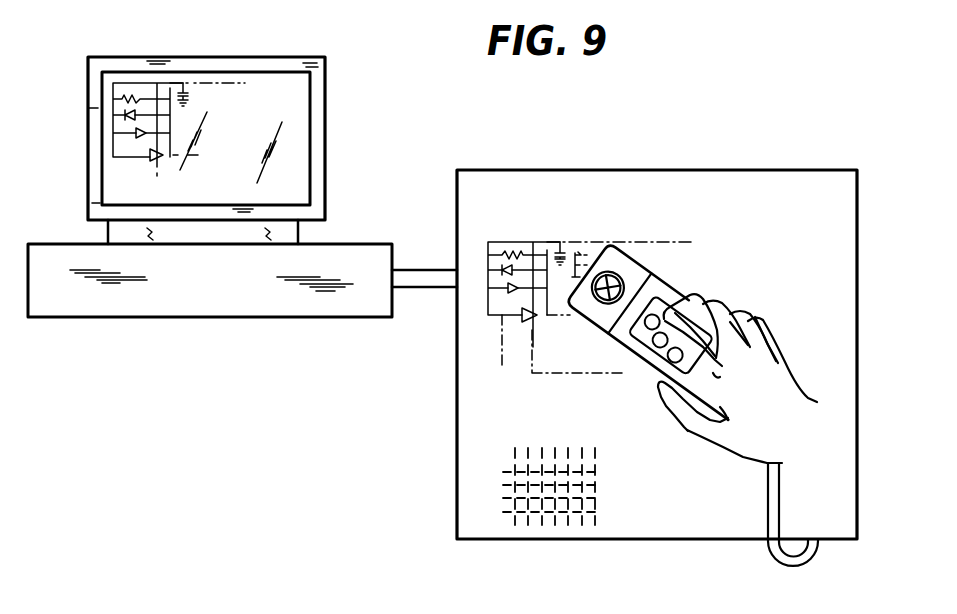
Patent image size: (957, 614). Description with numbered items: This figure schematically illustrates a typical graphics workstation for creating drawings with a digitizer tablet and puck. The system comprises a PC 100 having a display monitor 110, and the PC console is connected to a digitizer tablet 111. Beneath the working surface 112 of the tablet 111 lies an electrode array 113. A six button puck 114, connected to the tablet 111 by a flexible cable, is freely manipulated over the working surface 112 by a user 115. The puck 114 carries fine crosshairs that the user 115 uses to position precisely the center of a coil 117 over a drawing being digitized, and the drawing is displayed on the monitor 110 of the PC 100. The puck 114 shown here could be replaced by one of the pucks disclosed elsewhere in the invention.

The PC 100 is at (94, 310).
The display monitor 110 is at (325, 157).
The digitizer tablet 111 is at (570, 168).
The working surface 112 is at (668, 207).
The electrode array 113 is at (542, 515).
The six button puck 114 is at (637, 365).
The user 115 is at (715, 447).
The coil 117 is at (612, 277).